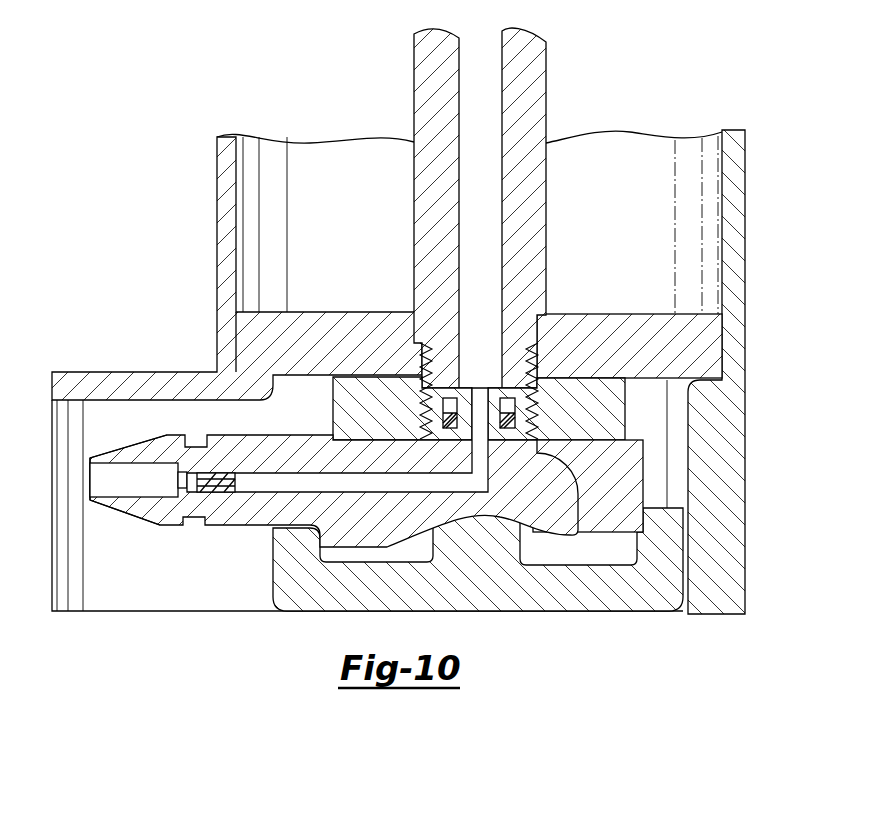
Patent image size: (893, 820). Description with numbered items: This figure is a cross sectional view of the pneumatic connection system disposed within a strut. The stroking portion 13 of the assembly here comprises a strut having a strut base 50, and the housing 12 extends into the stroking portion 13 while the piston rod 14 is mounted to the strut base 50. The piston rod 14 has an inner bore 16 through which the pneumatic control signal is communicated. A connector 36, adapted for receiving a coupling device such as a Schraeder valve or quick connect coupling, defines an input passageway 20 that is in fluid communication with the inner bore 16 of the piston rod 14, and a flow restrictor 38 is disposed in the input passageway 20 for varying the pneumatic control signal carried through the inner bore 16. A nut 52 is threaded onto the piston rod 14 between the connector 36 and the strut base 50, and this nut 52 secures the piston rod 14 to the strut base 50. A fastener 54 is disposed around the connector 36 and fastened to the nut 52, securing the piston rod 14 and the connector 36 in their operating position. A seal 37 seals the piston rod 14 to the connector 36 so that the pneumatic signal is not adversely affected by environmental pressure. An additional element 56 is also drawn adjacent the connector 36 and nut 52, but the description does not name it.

The housing 12 is at (657, 148).
The stroking portion 13 is at (735, 176).
The piston rod 14 is at (548, 94).
The inner bore 16 is at (485, 68).
The input passageway 20 is at (265, 483).
The connector 36 is at (136, 510).
The seal 37 is at (513, 425).
The flow restrictor 38 is at (220, 492).
The strut base 50 is at (598, 312).
The nut 52 is at (613, 433).
The fastener 54 is at (637, 597).
The insert block 56 is at (617, 483).